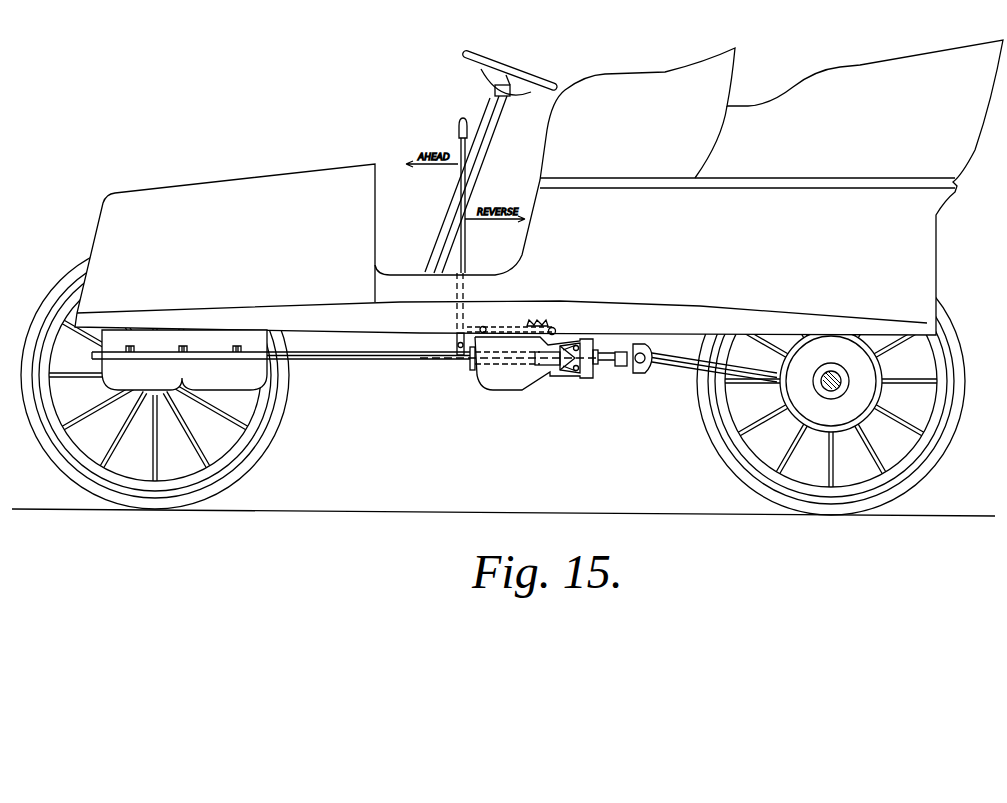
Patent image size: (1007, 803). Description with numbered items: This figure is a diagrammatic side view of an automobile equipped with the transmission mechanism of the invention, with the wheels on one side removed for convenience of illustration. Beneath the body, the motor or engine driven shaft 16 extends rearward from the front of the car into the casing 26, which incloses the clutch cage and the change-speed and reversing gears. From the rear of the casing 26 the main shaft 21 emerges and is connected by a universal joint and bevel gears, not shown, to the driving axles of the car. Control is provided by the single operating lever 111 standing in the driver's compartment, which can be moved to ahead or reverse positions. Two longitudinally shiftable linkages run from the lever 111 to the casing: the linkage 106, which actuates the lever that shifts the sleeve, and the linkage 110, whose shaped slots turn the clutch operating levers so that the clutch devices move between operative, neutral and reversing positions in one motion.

The motor or engine driven shaft 16 is at (378, 362).
The main shaft 21 is at (605, 366).
The casing 26 is at (513, 372).
The longitudinally shiftable linkage 106 is at (553, 328).
The longitudinally shiftable linkage 110 is at (587, 379).
The operating lever 111 is at (462, 246).